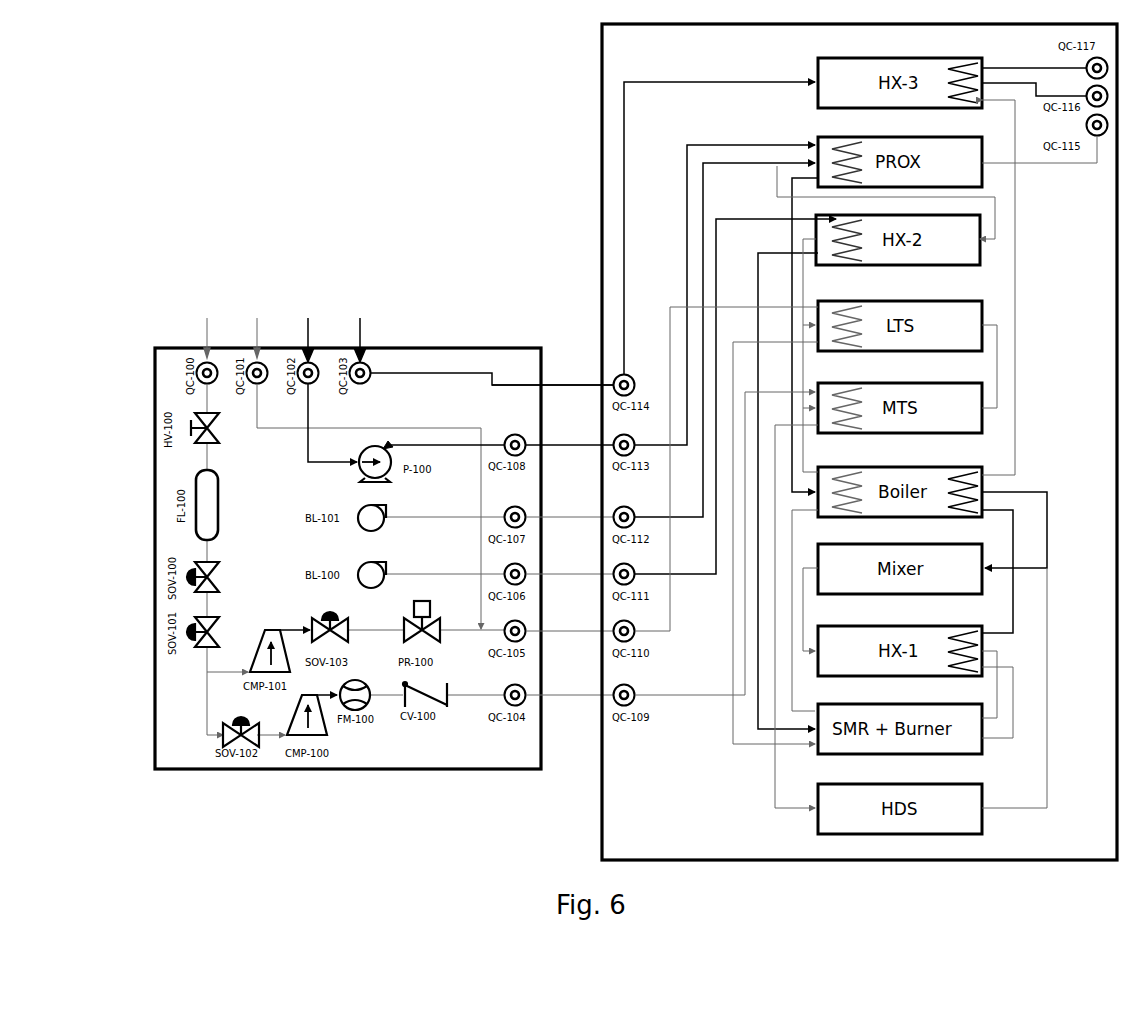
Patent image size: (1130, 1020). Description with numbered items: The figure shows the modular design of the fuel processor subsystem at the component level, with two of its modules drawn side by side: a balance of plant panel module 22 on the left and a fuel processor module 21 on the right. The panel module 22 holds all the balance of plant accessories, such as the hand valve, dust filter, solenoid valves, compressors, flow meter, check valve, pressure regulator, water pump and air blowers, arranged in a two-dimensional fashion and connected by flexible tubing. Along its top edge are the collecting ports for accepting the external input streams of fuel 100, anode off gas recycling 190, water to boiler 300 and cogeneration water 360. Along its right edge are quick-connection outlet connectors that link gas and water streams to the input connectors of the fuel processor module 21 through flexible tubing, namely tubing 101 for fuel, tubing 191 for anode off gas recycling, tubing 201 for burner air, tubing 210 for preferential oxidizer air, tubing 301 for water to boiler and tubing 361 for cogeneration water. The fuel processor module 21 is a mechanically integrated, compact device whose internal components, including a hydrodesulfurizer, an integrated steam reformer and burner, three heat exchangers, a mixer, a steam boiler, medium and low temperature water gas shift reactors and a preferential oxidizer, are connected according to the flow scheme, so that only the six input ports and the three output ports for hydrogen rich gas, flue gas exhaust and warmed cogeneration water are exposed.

The fuel 100 is at (205, 340).
The anode off gas recycling 190 is at (255, 340).
The water to boiler 300 is at (306, 340).
The cogeneration water 360 is at (358, 340).
The balance of plant panel module 22 is at (455, 347).
The fuel processor module 21 is at (600, 152).
The flexible tubing for cogeneration water 361 is at (556, 392).
The flexible tubing for water to boiler 301 is at (562, 452).
The flexible tubing for PROX air 210 is at (562, 524).
The flexible tubing for burner air 201 is at (562, 581).
The flexible tubing for anode off gas recycling 191 is at (562, 638).
The flexible tubing for fuel 101 is at (562, 702).